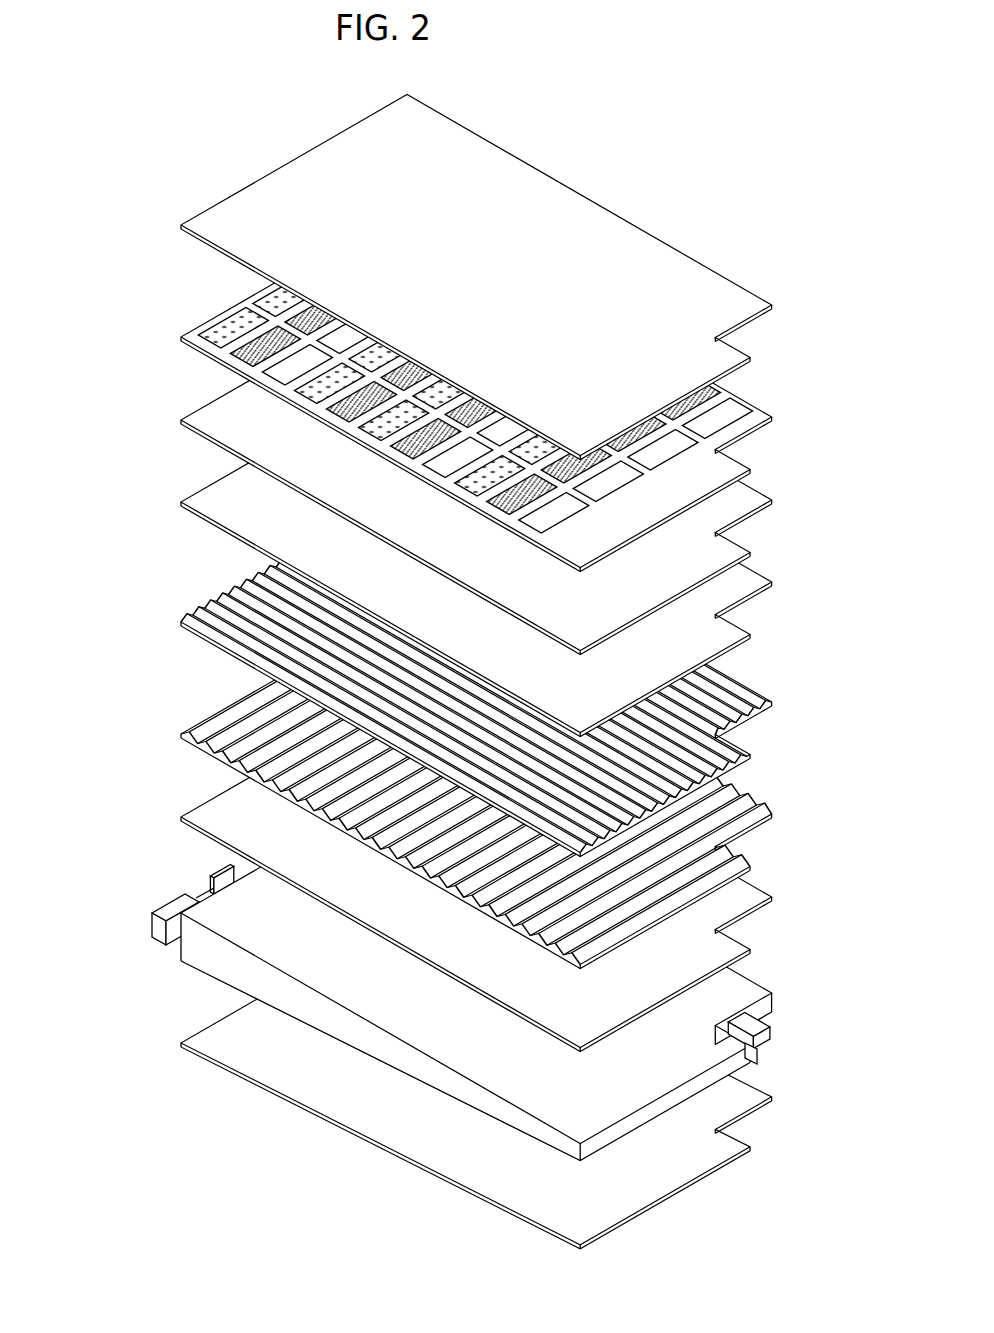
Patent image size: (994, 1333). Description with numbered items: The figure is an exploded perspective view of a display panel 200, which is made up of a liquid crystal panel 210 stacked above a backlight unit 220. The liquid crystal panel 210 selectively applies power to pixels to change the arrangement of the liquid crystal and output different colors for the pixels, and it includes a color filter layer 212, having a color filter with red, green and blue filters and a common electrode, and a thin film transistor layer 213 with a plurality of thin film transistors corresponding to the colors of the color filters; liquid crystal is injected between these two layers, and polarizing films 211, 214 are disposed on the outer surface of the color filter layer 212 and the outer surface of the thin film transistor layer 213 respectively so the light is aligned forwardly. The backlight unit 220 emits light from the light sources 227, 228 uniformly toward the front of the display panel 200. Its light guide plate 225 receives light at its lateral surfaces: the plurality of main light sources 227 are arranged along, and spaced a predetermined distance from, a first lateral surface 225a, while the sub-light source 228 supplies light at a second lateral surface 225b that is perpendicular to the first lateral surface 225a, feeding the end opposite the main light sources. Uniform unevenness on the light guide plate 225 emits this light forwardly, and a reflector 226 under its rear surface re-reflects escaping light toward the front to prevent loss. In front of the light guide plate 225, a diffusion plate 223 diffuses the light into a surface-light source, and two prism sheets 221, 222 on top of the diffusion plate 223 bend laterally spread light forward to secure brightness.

The display panel 200 is at (135, 131).
The liquid crystal panel 210 is at (73, 192).
The polarizing film 211 is at (236, 213).
The color filter layer 212 is at (229, 313).
The thin film transistor layer 213 is at (229, 398).
The polarizing film 214 is at (229, 493).
The backlight unit 220 is at (73, 595).
The prism sheet 221 is at (229, 607).
The prism sheet 222 is at (229, 716).
The diffusion plate 223 is at (230, 796).
The light guide plate 225 is at (232, 964).
The first lateral surface 225a is at (203, 893).
The second lateral surface 225b is at (760, 1048).
The reflector 226 is at (229, 1042).
The main light source 227 is at (232, 864).
The sub-light source 228 is at (772, 1022).